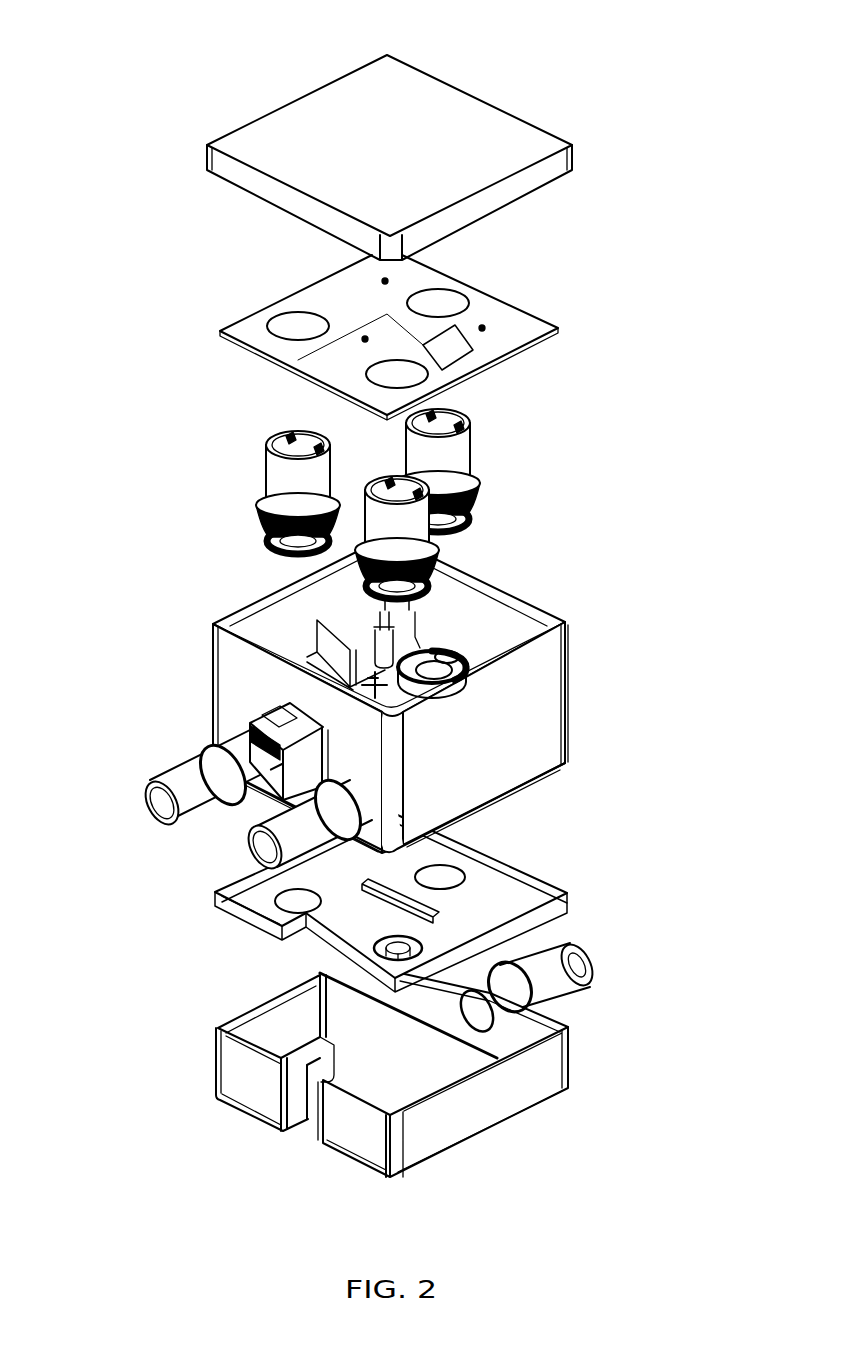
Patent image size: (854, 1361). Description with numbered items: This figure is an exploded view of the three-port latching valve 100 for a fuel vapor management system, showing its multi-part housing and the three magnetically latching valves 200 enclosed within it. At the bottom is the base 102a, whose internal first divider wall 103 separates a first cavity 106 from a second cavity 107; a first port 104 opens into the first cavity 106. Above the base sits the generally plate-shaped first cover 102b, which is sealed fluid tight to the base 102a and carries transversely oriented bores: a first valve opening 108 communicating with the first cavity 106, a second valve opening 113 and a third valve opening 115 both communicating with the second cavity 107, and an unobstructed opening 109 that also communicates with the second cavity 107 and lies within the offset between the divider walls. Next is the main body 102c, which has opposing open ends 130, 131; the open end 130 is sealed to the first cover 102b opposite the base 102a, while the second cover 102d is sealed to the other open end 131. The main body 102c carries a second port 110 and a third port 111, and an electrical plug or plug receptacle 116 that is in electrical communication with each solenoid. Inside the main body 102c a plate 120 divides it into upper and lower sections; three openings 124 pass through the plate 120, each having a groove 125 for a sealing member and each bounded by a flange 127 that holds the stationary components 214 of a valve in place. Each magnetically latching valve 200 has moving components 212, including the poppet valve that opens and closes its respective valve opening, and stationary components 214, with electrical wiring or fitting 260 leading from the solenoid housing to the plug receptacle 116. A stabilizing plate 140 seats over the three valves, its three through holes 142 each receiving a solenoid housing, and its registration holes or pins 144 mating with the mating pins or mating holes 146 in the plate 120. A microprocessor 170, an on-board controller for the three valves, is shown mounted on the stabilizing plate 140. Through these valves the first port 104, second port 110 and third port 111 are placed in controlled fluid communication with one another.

The three-port latching valve 100 is at (508, 72).
The base 102a is at (397, 1058).
The first cover 102b is at (410, 898).
The main body 102c is at (402, 694).
The second cover 102d is at (243, 148).
The first divider wall 103 is at (452, 1068).
The first port 104 is at (590, 972).
The first cavity 106 is at (516, 1021).
The second cavity 107 is at (250, 1028).
The first valve opening 108 is at (455, 865).
The unobstructed opening 109 is at (440, 900).
The second port 110 is at (248, 848).
The third port 111 is at (160, 803).
The second valve opening 113 is at (375, 950).
The third valve opening 115 is at (237, 900).
The electrical plug or plug receptacle 116 is at (243, 737).
The plate 120 is at (363, 647).
The opening 124 is at (541, 665).
The groove 125 is at (436, 698).
The flange 127 is at (458, 658).
The open end 130 is at (564, 765).
The open end 131 is at (215, 624).
The stabilizing plate 140 is at (403, 337).
The through holes 142 is at (278, 308).
The registration holes or pins 144 is at (482, 322).
The mating pins or mating holes 146 is at (380, 686).
The microprocessor 170 is at (457, 356).
The magnetically latching valve 200 is at (356, 494).
The moving components 212 is at (267, 543).
The stationary components 214 is at (278, 470).
The electrical wiring or fitting 260 is at (455, 415).